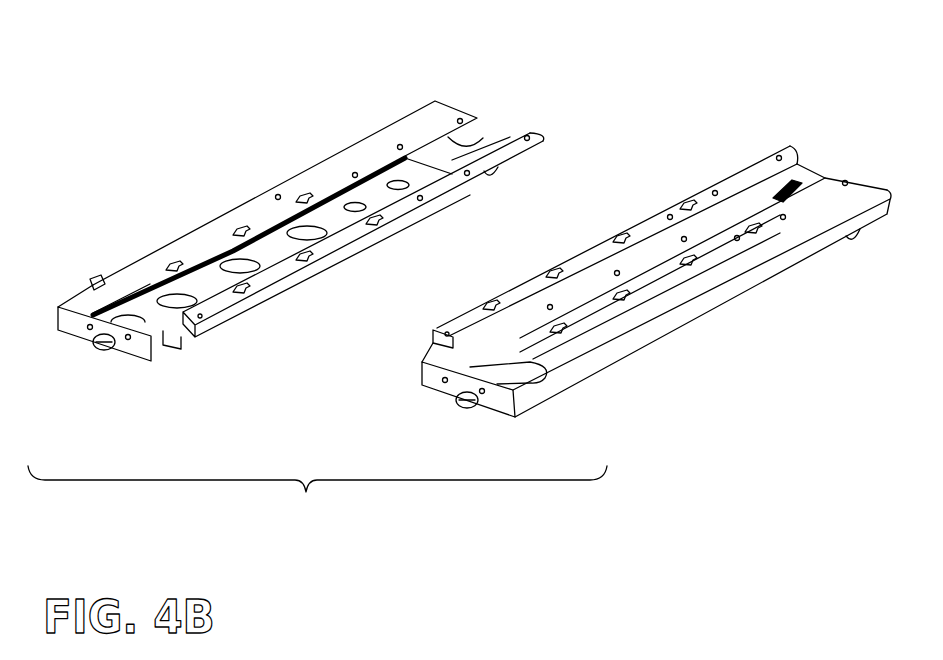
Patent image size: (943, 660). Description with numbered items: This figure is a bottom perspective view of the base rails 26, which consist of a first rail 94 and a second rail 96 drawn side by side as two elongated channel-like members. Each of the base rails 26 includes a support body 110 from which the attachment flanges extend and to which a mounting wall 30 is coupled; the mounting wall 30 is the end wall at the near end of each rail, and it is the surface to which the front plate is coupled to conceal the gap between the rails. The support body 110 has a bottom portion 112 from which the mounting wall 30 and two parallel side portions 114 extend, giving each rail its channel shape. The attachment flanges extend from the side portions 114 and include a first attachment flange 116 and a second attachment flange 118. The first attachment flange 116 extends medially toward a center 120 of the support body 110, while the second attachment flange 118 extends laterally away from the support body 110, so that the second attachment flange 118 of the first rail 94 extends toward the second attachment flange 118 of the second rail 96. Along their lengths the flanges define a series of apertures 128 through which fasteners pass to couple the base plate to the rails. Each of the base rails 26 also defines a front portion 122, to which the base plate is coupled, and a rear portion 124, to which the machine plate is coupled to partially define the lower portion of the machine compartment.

The base rails 26 is at (317, 497).
The mounting wall 30 is at (80, 323).
The first rail 94 is at (425, 103).
The second rail 96 is at (773, 157).
The support body 110 is at (157, 360).
The bottom portion 112 is at (188, 337).
The side portions 114 is at (100, 294).
The first attachment flange 116 is at (243, 200).
The second attachment flange 118 is at (510, 145).
The center 120 is at (272, 200).
The front portion 122 is at (148, 277).
The rear portion 124 is at (398, 132).
The apertures 128 is at (176, 265).